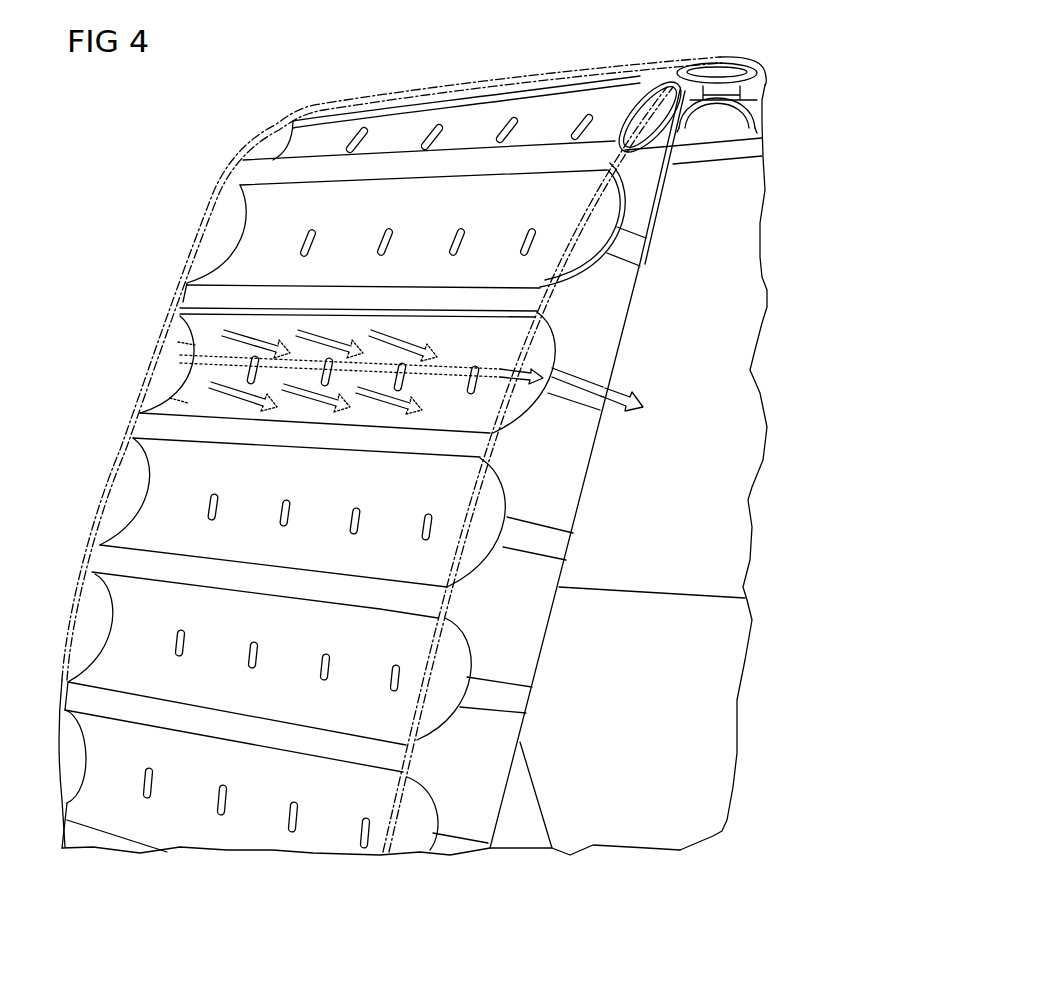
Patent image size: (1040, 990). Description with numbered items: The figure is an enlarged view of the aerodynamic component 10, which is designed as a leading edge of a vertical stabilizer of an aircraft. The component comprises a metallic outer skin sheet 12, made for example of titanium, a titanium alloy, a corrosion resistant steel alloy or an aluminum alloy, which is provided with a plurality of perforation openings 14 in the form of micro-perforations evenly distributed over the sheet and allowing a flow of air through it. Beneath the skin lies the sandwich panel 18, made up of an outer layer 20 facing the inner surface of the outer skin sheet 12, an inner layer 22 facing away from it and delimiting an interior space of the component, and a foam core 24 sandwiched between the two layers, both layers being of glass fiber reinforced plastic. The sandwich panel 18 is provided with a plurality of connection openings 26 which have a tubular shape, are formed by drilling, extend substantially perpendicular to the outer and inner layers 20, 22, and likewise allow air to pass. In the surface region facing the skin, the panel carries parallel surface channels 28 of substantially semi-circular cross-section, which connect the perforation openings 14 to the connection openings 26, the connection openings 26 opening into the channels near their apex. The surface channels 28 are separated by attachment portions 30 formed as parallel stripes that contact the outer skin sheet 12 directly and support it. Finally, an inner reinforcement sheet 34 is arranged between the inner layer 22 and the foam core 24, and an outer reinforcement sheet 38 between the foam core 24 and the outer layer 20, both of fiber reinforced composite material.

The aerodynamic component 10 is at (774, 263).
The outer skin sheet 12 is at (260, 203).
The perforation openings 14 is at (480, 200).
The sandwich panel 18 is at (643, 324).
The outer layer 20 is at (478, 568).
The inner layer 22 is at (540, 654).
The foam core 24 is at (530, 618).
The connection openings 26 is at (613, 384).
The surface channels 28 is at (413, 810).
The attachment portions 30 is at (265, 727).
The inner reinforcement sheet 34 is at (758, 103).
The outer reinforcement sheet 38 is at (622, 160).